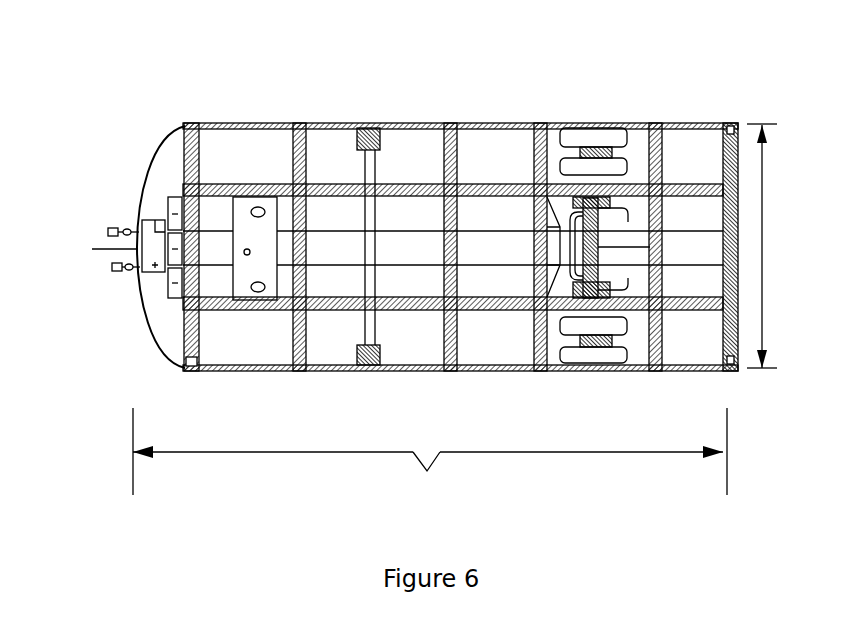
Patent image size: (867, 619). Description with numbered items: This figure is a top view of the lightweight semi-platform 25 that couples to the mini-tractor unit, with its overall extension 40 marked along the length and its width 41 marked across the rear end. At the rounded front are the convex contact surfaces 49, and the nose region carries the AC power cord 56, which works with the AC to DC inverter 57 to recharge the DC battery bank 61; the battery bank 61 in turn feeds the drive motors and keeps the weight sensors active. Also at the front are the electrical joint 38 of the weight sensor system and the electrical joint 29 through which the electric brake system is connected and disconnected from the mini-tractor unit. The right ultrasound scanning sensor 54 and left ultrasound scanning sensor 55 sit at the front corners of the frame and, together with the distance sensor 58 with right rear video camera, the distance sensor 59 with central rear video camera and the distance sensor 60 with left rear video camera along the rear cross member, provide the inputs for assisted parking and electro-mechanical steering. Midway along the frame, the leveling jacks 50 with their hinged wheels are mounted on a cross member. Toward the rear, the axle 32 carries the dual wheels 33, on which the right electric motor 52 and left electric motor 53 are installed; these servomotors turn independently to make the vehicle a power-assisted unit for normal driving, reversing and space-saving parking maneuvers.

The semi-platform 25 is at (72, 110).
The AC power cord 56 is at (140, 222).
The right ultrasound scanning sensor 54 is at (193, 124).
The left ultrasound scanning sensor 55 is at (196, 370).
The DC battery bank 61 is at (167, 198).
The electrical joint of the weight sensor system 38 is at (108, 231).
The AC to DC inverter 57 is at (92, 249).
The electrical joint of electric brakes 29 is at (110, 267).
The convex contact surfaces 49 is at (143, 370).
The leveling jacks 50 is at (359, 123).
The dual wheels 33 is at (612, 123).
The right electric motor 52 is at (608, 247).
The left electric motor 53 is at (611, 253).
The axle 32 is at (655, 247).
The distance sensor with central rear video camera 59 is at (738, 236).
The distance sensor with right rear video camera 58 is at (732, 123).
The distance sensor with left rear video camera 60 is at (732, 371).
The width 41 is at (762, 237).
The extension 40 is at (430, 461).